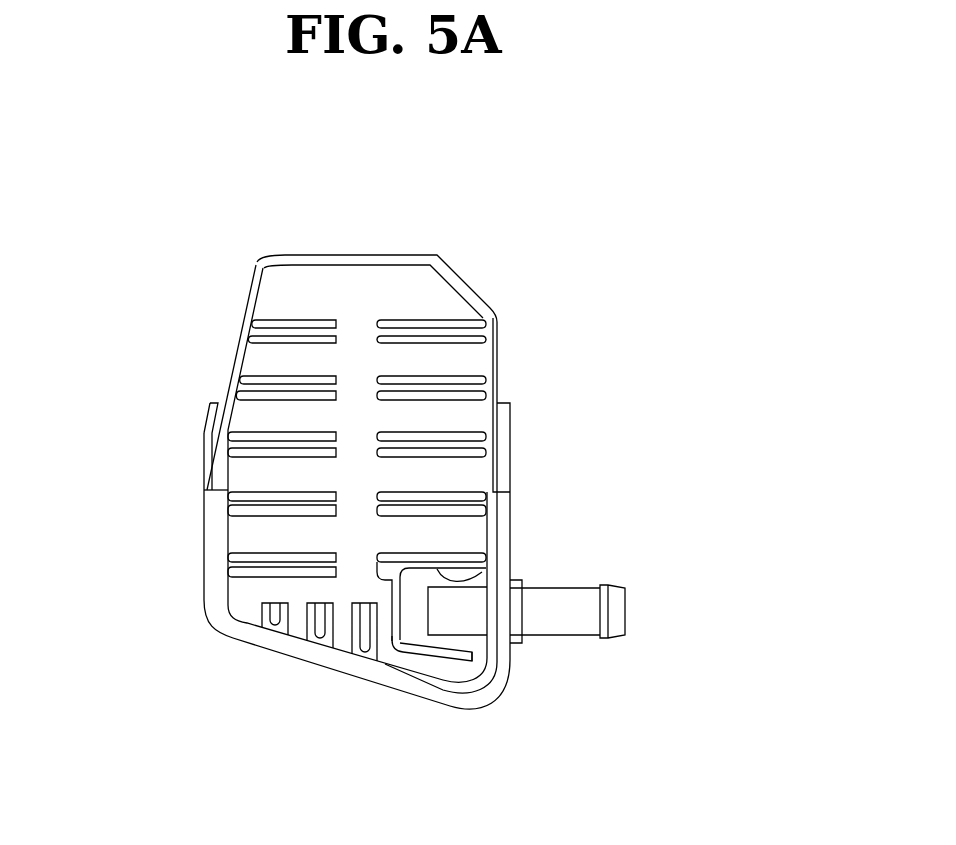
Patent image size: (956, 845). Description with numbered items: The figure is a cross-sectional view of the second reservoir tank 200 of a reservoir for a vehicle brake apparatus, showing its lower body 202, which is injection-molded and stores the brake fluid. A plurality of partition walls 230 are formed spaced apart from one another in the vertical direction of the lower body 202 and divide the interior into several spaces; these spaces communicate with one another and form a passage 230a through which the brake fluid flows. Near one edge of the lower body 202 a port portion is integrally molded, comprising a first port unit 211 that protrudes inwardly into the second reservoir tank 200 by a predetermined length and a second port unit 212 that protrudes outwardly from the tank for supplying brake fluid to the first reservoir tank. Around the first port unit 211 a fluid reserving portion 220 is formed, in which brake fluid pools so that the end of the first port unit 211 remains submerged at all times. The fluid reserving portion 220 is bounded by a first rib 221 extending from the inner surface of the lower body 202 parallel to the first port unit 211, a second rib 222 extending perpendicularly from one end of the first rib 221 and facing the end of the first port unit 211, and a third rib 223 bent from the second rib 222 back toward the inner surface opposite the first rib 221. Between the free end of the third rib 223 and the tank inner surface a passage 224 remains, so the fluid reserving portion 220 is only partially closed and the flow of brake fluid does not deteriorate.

The second reservoir tank 200 is at (627, 203).
The lower body 202 is at (492, 310).
The partition wall 230 is at (298, 388).
The passage 230a is at (225, 423).
The second rib 222 is at (390, 588).
The first rib 221 is at (482, 572).
The first port unit 211 is at (463, 603).
The second port unit 212 is at (568, 600).
The fluid reserving portion 220 is at (421, 609).
The third rib 223 is at (403, 643).
The passage 224 is at (486, 660).